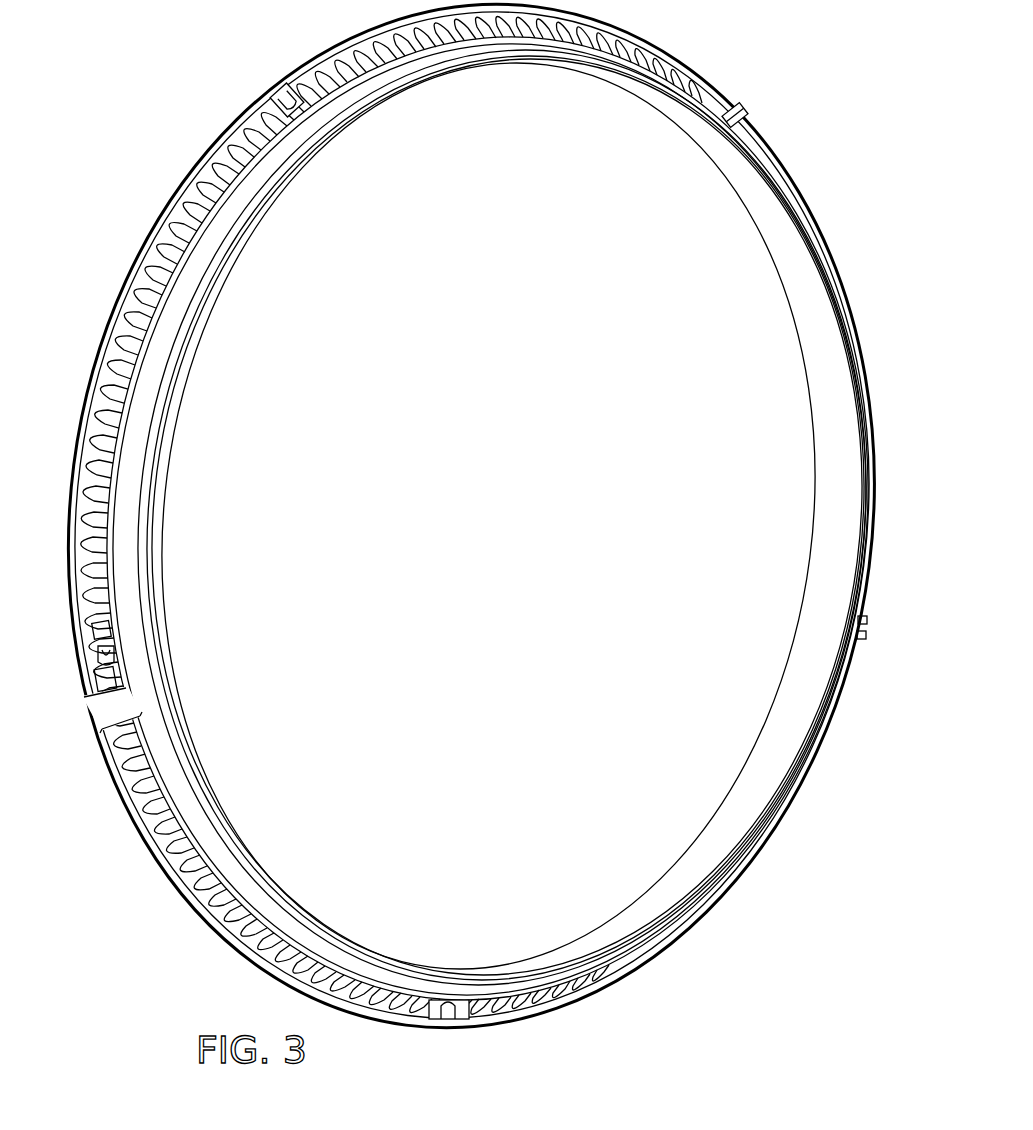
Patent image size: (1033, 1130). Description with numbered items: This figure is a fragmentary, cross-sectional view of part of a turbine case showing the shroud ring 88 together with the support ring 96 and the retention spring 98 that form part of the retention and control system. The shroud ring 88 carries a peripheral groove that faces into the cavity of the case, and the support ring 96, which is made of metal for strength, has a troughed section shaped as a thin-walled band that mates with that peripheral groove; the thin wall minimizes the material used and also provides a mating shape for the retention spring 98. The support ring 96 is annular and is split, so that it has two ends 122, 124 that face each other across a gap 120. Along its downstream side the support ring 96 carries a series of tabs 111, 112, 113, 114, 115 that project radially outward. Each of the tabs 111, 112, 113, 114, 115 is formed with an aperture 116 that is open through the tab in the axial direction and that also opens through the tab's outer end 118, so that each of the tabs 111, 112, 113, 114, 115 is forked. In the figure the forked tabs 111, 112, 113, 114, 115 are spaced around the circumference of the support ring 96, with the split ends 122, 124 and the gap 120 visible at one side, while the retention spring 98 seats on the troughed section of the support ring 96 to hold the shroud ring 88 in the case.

The shroud ring 88 is at (745, 775).
The support ring 96 is at (318, 90).
The retention spring 98 is at (168, 200).
The tab 111 is at (728, 112).
The tab 112 is at (862, 640).
The tab 113 is at (463, 1018).
The tab 114 is at (95, 635).
The tab 115 is at (286, 92).
The aperture 116 is at (100, 655).
The outer end 118 is at (97, 672).
The gap 120 is at (112, 712).
The end 122 is at (125, 697).
The end 124 is at (140, 703).